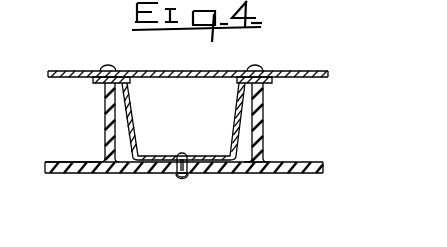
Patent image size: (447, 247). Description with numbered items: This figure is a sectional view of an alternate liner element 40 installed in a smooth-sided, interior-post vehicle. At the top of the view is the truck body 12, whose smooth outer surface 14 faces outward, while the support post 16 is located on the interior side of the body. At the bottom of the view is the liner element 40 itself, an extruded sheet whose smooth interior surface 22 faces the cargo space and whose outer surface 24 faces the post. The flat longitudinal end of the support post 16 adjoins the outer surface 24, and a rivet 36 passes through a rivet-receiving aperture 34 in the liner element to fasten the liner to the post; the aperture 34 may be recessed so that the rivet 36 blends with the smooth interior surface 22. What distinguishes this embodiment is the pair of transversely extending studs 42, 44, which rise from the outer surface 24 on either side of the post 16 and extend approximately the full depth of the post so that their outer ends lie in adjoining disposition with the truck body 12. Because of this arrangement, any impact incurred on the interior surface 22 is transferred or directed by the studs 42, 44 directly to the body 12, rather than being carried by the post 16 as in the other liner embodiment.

The truck body 12 is at (283, 71).
The smooth outer surface 14 is at (80, 70).
The support post 16 is at (132, 100).
The smooth interior surface 22 is at (118, 177).
The outer surface 24 is at (77, 162).
The rivet-receiving aperture 34 is at (192, 173).
The rivet 36 is at (182, 152).
The liner element 40 is at (250, 174).
The transversely extending stud 42 is at (258, 120).
The transversely extending stud 44 is at (105, 117).